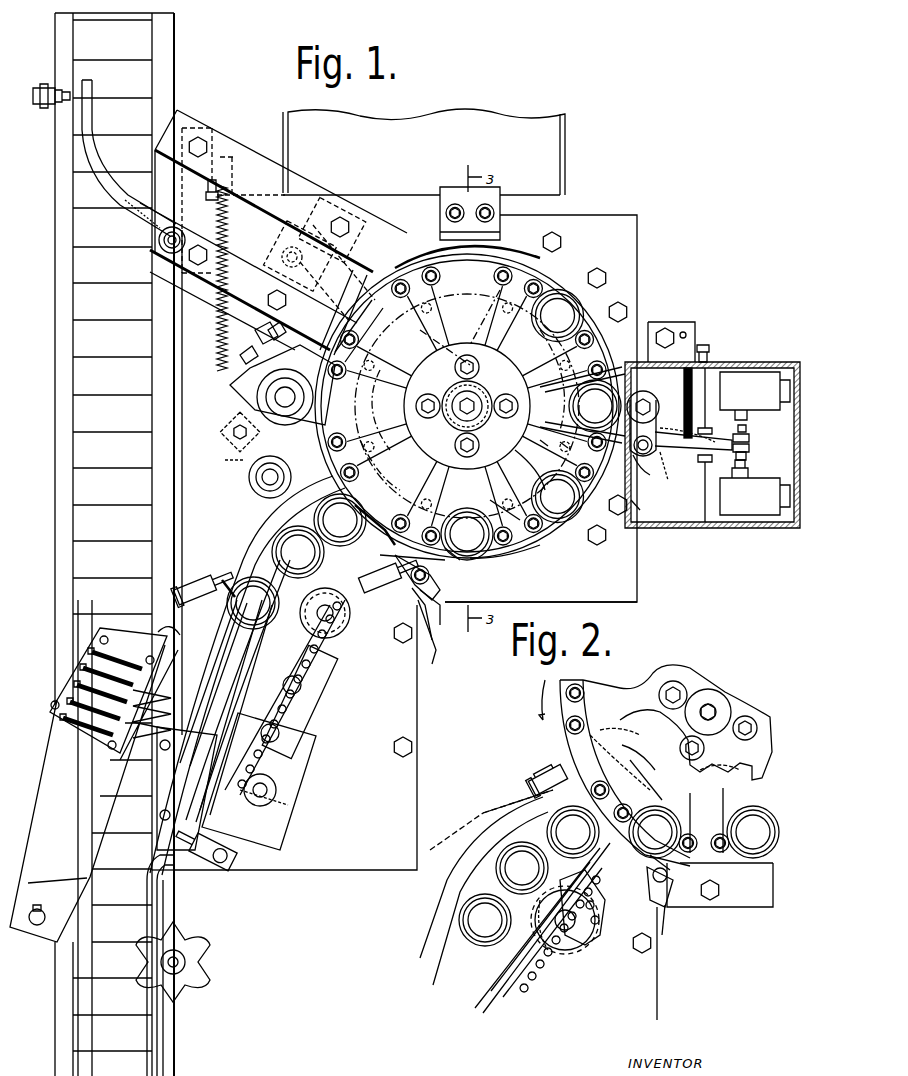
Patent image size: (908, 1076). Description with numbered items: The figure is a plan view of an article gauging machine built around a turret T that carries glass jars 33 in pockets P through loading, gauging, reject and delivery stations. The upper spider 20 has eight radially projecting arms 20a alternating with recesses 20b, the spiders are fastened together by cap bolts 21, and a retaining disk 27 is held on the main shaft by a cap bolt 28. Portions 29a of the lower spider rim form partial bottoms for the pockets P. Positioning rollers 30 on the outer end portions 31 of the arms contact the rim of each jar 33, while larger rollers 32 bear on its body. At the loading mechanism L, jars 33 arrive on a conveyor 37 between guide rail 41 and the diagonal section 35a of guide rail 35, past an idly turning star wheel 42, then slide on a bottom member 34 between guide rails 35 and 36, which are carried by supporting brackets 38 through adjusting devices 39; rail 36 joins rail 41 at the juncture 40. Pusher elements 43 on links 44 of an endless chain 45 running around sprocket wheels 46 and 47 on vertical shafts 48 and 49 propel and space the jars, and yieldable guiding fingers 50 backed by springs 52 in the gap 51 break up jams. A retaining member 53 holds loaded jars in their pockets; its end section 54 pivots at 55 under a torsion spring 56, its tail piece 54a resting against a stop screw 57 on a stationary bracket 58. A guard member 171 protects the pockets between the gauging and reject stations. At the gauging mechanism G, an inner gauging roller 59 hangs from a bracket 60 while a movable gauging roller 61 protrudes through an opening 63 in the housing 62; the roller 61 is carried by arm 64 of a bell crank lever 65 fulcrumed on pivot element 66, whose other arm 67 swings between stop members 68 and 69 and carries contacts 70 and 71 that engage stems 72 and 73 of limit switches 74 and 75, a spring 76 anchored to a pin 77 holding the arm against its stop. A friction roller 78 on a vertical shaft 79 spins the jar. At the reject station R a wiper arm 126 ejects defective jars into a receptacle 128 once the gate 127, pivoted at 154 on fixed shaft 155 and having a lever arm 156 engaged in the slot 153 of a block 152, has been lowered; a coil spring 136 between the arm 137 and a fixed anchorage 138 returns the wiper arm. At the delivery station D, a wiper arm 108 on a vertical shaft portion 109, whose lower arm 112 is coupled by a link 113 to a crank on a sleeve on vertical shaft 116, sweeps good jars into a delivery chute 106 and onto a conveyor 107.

In FIG. 1, the conveyor 107 is at (148, 47).
In FIG. 1, the delivery chute 106 is at (245, 200).
In FIG. 1, the fixed anchorage 138 is at (232, 185).
In FIG. 1, the receptacle 128 is at (555, 147).
In FIG. 1, the gate 127 is at (495, 242).
In FIG. 1, the guard member 171 is at (628, 270).
In FIG. 1, the retaining or guard member 53 is at (541, 590).
In FIG. 1, the fixed horizontal shaft 155 is at (312, 232).
In FIG. 1, the pivot 154 is at (272, 270).
In FIG. 1, the delivery station D is at (367, 268).
In FIG. 1, the coil spring 136 is at (220, 320).
In FIG. 1, the vertical shaft portion 109 is at (300, 400).
In FIG. 1, the wiper arm 108 is at (362, 340).
In FIG. 1, the horizontal slot 153 is at (255, 325).
In FIG. 1, the tail piece or lever arm 156 is at (285, 328).
In FIG. 1, the block 152 is at (245, 343).
In FIG. 1, the lower arm 112 is at (232, 432).
In FIG. 1, the link 113 is at (221, 461).
In FIG. 1, the vertical shaft 116 is at (250, 478).
In FIG. 1, the laterally extending arm 137 is at (232, 400).
In FIG. 1, the turret T is at (577, 272).
In FIG. 2, the turret T is at (764, 695).
In FIG. 1, the reject station R is at (428, 237).
In FIG. 1, the cap bolt 28 is at (478, 412).
In FIG. 2, the cap bolt 28 is at (714, 700).
In FIG. 1, the upper spider 20 is at (428, 397).
In FIG. 2, the upper spider 20 is at (690, 680).
In FIG. 1, the retaining disk 27 is at (478, 372).
In FIG. 2, the retaining disk 27 is at (708, 688).
In FIG. 1, the cap bolts 21 is at (455, 445).
In FIG. 2, the cap bolts 21 is at (703, 745).
In FIG. 1, the wiper arm 126 is at (470, 330).
In FIG. 1, the radially projecting arms 20a is at (493, 409).
In FIG. 1, the re-entrant portions or recesses 20b is at (387, 410).
In FIG. 1, the turret pockets P is at (560, 550).
In FIG. 2, the turret pockets P is at (638, 750).
In FIG. 1, the glass jar 33 is at (424, 504).
In FIG. 2, the glass jar 33 is at (768, 795).
In FIG. 1, the rim strip portions 29a is at (386, 466).
In FIG. 2, the rim strip portions 29a is at (565, 752).
In FIG. 1, the positioning rollers 32 is at (530, 470).
In FIG. 2, the positioning rollers 32 is at (633, 759).
In FIG. 1, the article positioning rollers 30 is at (505, 499).
In FIG. 2, the article positioning rollers 30 is at (646, 775).
In FIG. 1, the inner gauging roller 59 is at (533, 435).
In FIG. 1, the supporting bracket 60 is at (553, 438).
In FIG. 1, the outer end portions 31 is at (536, 548).
In FIG. 2, the outer end portions 31 is at (615, 799).
In FIG. 1, the pivot 55 is at (462, 568).
In FIG. 2, the pivot 55 is at (668, 870).
In FIG. 1, the torsion spring 56 is at (424, 577).
In FIG. 2, the torsion spring 56 is at (673, 887).
In FIG. 1, the end section 54 is at (382, 540).
In FIG. 1, the adjustable stop screw 57 is at (425, 602).
In FIG. 2, the adjustable stop screw 57 is at (662, 912).
In FIG. 1, the stationary bracket 58 is at (429, 616).
In FIG. 2, the stationary bracket 58 is at (670, 928).
In FIG. 1, the tail piece 54a is at (434, 633).
In FIG. 2, the tail piece 54a is at (703, 908).
In FIG. 1, the opening 63 is at (633, 365).
In FIG. 1, the loading mechanism L is at (285, 683).
In FIG. 2, the loading mechanism L is at (514, 807).
In FIG. 1, the guide-rail 35 is at (300, 545).
In FIG. 2, the guide-rail 35 is at (470, 880).
In FIG. 1, the guide-rail 36 is at (200, 770).
In FIG. 2, the guide-rail 36 is at (488, 982).
In FIG. 1, the gap 51 is at (205, 655).
In FIG. 1, the adjusting devices 39 is at (295, 708).
In FIG. 2, the adjusting devices 39 is at (535, 772).
In FIG. 1, the supporting brackets 38 is at (218, 585).
In FIG. 2, the supporting brackets 38 is at (540, 792).
In FIG. 1, the vertical shaft 49 is at (345, 630).
In FIG. 2, the vertical shaft 49 is at (543, 938).
In FIG. 1, the sprocket wheel 47 is at (270, 747).
In FIG. 2, the sprocket wheel 47 is at (566, 935).
In FIG. 1, the links 44 is at (283, 692).
In FIG. 2, the links 44 is at (598, 900).
In FIG. 1, the endless horizontal chain 45 is at (341, 741).
In FIG. 2, the endless horizontal chain 45 is at (611, 931).
In FIG. 1, the pusher elements 43 is at (243, 690).
In FIG. 2, the pusher elements 43 is at (600, 882).
In FIG. 1, the sprocket wheel 46 is at (280, 790).
In FIG. 1, the vertical shaft 48 is at (287, 799).
In FIG. 1, the bottom member 34 is at (187, 788).
In FIG. 1, the guide-rail section 35a is at (115, 808).
In FIG. 1, the springs 52 is at (90, 728).
In FIG. 1, the yieldable guiding fingers 50 is at (140, 735).
In FIG. 1, the conveyor 37 is at (138, 882).
In FIG. 1, the juncture 40 is at (150, 935).
In FIG. 1, the star wheel 42 is at (200, 958).
In FIG. 1, the guide rail 41 is at (150, 1025).
In FIG. 1, the gauging mechanism G is at (712, 421).
In FIG. 1, the spring 76 is at (671, 342).
In FIG. 1, the pin 77 is at (707, 340).
In FIG. 1, the vertical shaft 79 is at (678, 403).
In FIG. 1, the outer gauging roller 61 is at (647, 413).
In FIG. 1, the vertical pivot element 66 is at (649, 453).
In FIG. 1, the arm 64 is at (693, 435).
In FIG. 1, the arm 67 is at (687, 449).
In FIG. 1, the stop member 68 is at (710, 401).
In FIG. 1, the stop member 69 is at (700, 470).
In FIG. 1, the gauge limit switch 74 is at (755, 396).
In FIG. 1, the gauge limit switch 75 is at (755, 487).
In FIG. 1, the projecting stem 72 is at (753, 423).
In FIG. 1, the adjustable lateral contact 70 is at (751, 435).
In FIG. 1, the adjustable lateral contact 71 is at (750, 447).
In FIG. 1, the projecting stem 73 is at (752, 460).
In FIG. 1, the bell crank lever 65 is at (644, 471).
In FIG. 1, the article spinning friction roller 78 is at (672, 472).
In FIG. 1, the box-like housing structure 62 is at (644, 500).